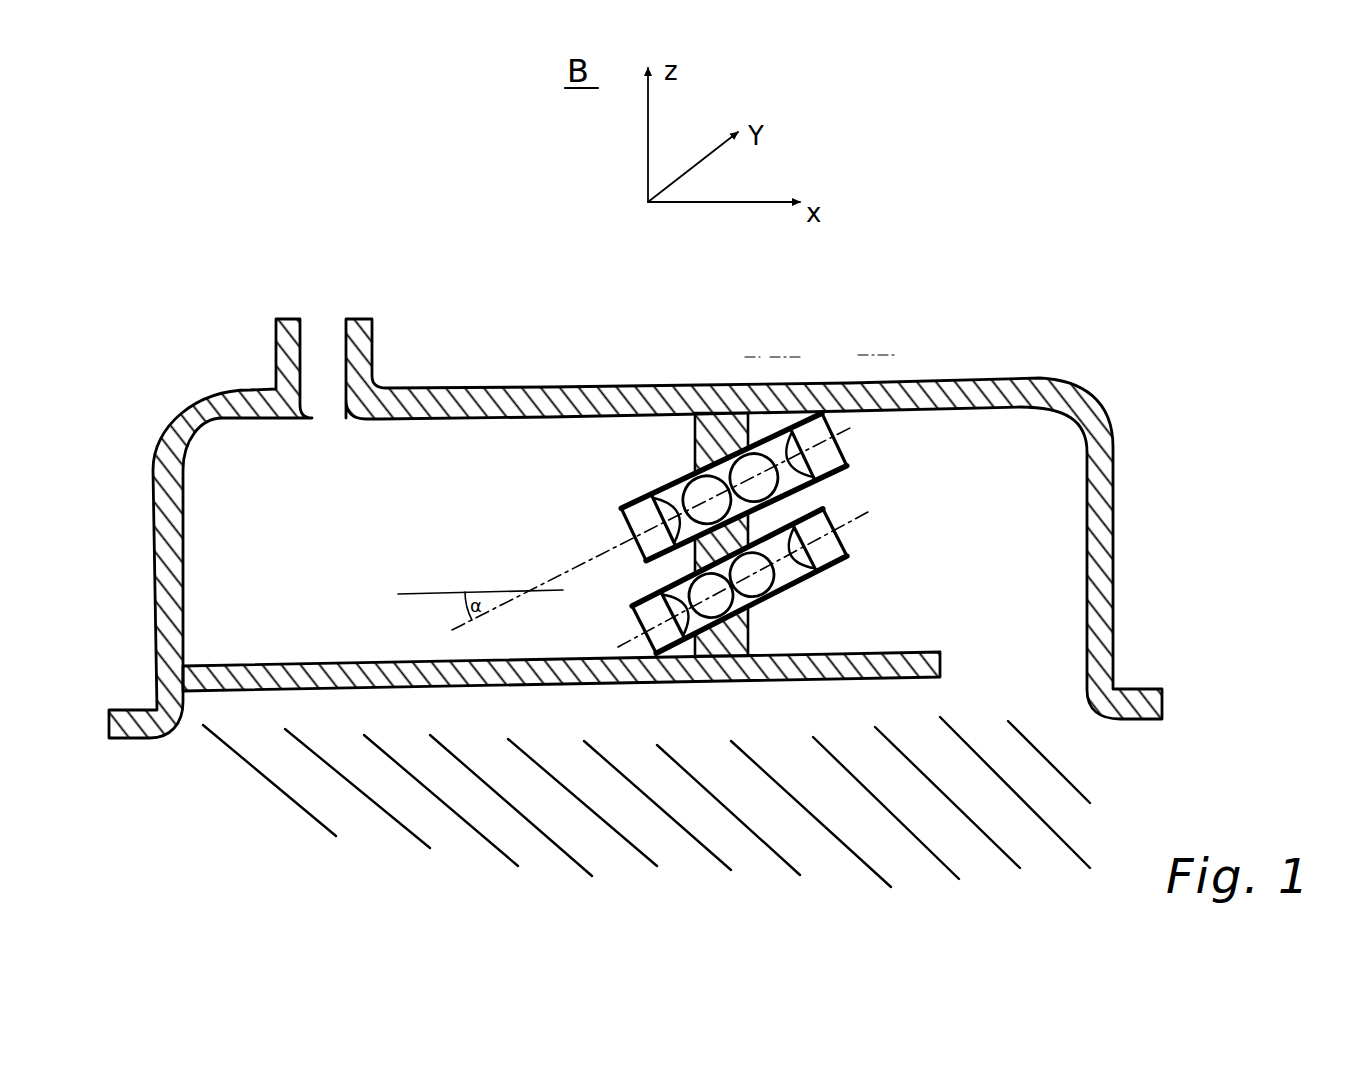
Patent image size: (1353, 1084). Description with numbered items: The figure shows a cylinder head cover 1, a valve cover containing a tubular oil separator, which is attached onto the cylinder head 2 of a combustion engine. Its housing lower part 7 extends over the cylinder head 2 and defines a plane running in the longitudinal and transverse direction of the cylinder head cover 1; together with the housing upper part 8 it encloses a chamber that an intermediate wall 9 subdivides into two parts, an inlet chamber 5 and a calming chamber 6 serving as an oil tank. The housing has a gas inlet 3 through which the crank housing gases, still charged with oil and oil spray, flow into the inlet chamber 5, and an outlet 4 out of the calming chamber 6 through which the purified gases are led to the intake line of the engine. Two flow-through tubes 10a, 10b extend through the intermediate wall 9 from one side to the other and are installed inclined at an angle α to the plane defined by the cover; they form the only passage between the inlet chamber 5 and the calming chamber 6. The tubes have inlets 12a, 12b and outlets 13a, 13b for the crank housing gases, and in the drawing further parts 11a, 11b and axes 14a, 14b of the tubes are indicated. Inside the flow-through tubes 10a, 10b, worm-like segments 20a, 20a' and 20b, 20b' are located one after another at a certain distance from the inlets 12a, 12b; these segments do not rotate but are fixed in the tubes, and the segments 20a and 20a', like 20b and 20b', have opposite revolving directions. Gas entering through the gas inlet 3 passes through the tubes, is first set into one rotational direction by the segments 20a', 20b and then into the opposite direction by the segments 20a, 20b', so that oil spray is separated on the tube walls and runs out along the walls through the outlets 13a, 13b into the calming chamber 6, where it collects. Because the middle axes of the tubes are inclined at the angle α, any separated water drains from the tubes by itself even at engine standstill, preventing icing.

The cylinder head cover 1 is at (648, 474).
The cylinder head 2 is at (742, 857).
The gas inlet 3 is at (988, 662).
The outlet 4 is at (320, 335).
The inlet chamber 5 is at (1003, 435).
The calming chamber 6 is at (463, 443).
The housing lower part 7 is at (295, 670).
The housing upper part 8 is at (1116, 518).
The intermediate wall 9 is at (735, 412).
The flow-through tube 10a is at (699, 466).
The flow-through tube 10b is at (751, 607).
The first end block of first sensor 11a is at (623, 512).
The end block of second sensor 11b is at (869, 577).
The inlet 12a is at (845, 428).
The inlet 12b is at (852, 540).
The outlet 13a is at (637, 543).
The outlet 13b is at (633, 617).
The sensing axis of first sensor 14a is at (612, 545).
The sensing axis of second sensor 14b is at (633, 633).
The worm-like segment 20a is at (721, 460).
The worm-like segment 20a' is at (696, 463).
The worm-like segment 20b is at (781, 628).
The worm-like segment 20b' is at (700, 576).